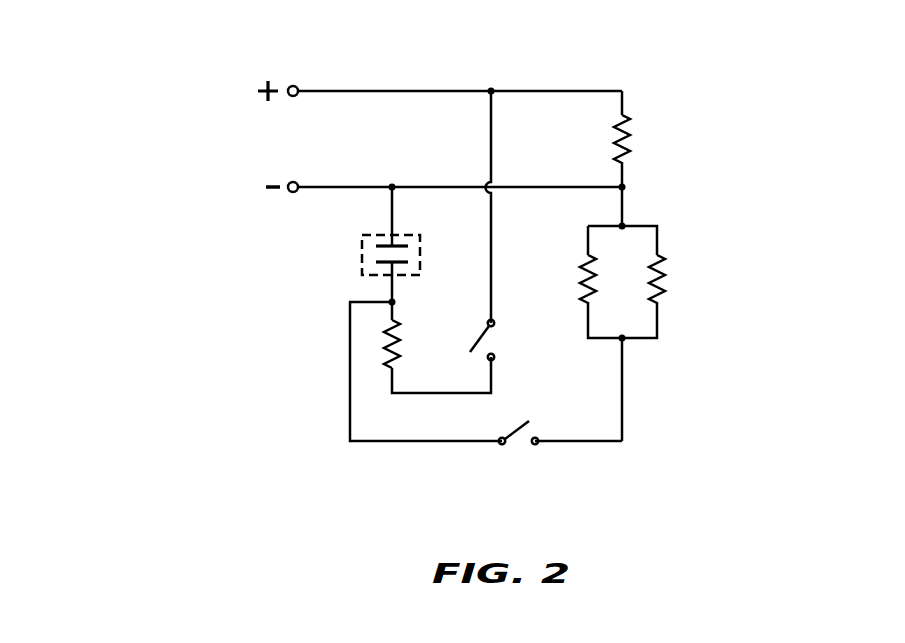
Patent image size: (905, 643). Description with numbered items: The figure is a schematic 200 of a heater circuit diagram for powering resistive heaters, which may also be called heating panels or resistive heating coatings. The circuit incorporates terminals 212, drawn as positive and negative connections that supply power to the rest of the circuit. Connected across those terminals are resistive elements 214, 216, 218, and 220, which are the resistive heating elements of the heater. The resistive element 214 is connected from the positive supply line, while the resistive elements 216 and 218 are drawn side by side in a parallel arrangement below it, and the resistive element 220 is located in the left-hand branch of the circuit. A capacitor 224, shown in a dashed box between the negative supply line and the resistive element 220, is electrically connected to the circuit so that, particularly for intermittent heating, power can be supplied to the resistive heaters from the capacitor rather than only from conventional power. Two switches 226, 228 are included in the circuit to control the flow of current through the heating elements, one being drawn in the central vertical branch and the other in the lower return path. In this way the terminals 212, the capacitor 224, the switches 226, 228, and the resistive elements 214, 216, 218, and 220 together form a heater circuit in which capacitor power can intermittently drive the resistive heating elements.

The schematic 200 is at (172, 190).
The terminals 212 is at (313, 145).
The resistive element 214 is at (635, 138).
The resistive element 216 is at (605, 258).
The resistive element 218 is at (673, 280).
The resistive element 220 is at (373, 365).
The capacitor 224 is at (347, 262).
The switch 226 is at (502, 343).
The switch 228 is at (523, 447).